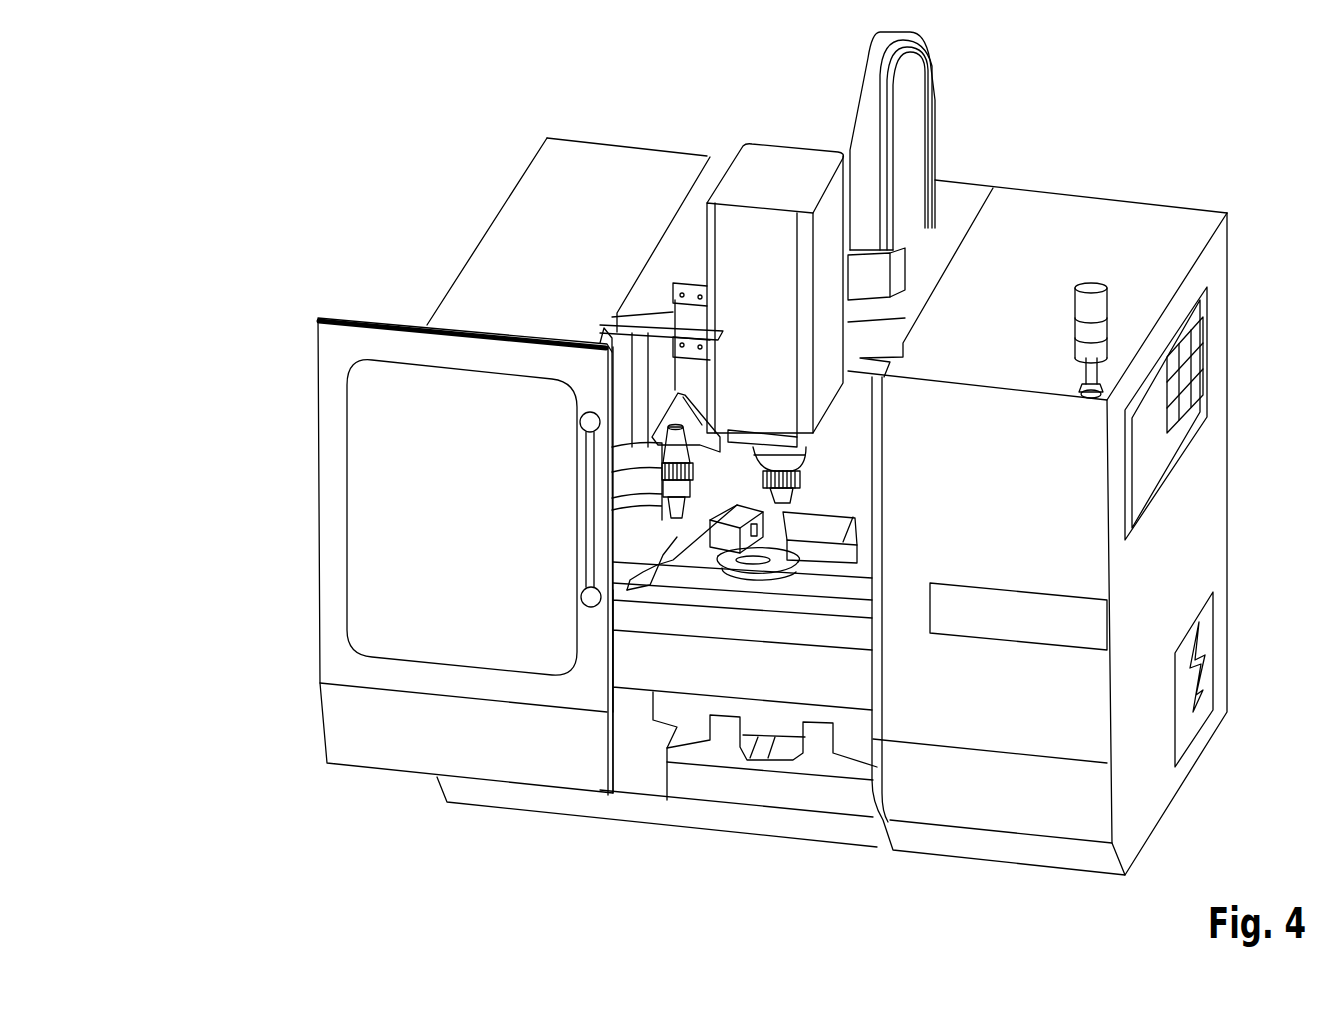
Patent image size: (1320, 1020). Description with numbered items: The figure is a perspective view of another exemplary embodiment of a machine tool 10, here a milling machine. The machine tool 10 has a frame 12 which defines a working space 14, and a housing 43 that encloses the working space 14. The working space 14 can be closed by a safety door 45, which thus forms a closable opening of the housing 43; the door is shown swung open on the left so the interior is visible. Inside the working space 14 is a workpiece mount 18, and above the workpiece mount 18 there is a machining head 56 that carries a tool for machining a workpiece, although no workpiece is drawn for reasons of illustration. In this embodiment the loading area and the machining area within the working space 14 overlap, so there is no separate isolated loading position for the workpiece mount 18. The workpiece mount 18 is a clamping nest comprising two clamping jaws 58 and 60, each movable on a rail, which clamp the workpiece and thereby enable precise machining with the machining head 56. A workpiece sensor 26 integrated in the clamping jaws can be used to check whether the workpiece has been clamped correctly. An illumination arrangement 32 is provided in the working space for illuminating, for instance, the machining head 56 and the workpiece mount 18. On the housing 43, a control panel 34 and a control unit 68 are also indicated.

The machine tool 10 is at (345, 104).
The frame 12 is at (1200, 560).
The working space 14 is at (633, 590).
The workpiece mount 18 is at (752, 548).
The workpiece sensor 26 is at (743, 550).
The illumination arrangement 32 is at (735, 432).
The control panel 34 is at (1197, 408).
The housing 43 is at (1120, 218).
The safety door 45 is at (332, 498).
The machining head 56 is at (797, 445).
The clamping jaw 58 is at (738, 490).
The clamping jaw 60 is at (800, 547).
The control unit 68 is at (1208, 650).